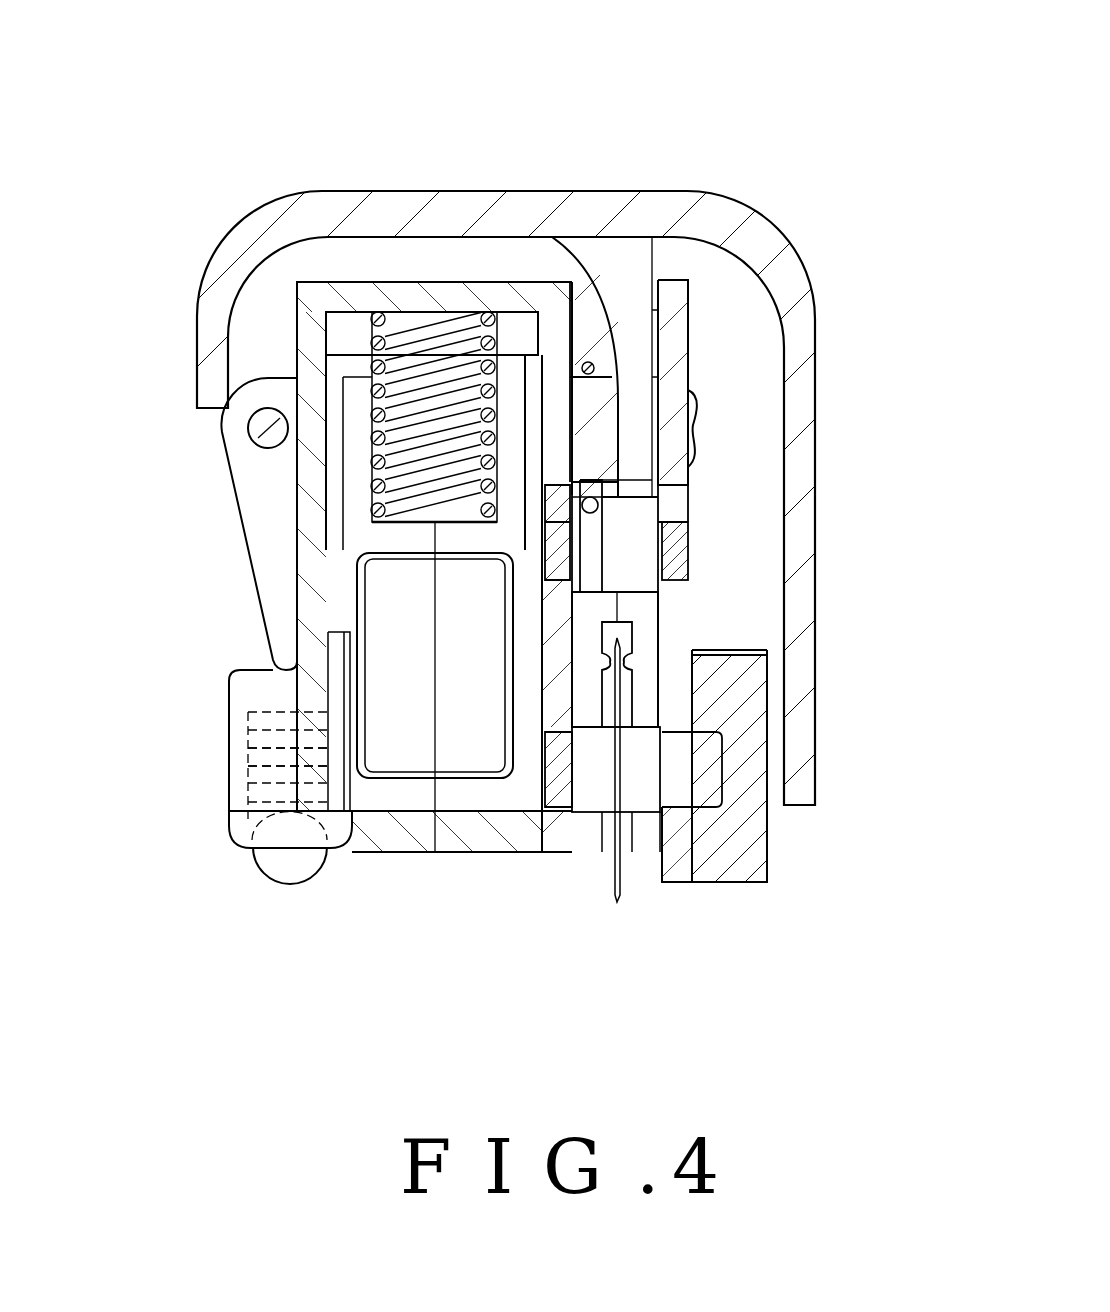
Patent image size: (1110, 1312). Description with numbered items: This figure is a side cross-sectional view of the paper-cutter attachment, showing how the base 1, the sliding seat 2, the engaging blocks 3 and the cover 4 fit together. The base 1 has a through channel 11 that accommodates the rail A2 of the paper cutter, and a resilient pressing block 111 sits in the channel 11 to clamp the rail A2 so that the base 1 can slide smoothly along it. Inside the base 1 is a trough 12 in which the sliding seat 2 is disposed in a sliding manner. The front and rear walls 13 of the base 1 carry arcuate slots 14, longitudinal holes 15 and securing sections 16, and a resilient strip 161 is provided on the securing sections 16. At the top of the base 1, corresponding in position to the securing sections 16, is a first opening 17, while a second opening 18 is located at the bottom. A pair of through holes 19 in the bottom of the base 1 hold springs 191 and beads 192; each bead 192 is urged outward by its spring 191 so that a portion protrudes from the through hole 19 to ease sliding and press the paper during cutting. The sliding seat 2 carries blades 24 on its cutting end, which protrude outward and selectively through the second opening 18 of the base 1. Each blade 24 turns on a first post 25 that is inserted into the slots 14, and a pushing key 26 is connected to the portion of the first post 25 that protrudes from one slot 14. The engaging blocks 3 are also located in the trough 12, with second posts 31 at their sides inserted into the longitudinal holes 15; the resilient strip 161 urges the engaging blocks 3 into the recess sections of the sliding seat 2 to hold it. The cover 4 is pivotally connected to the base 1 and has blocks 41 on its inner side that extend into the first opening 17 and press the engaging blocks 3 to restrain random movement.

The base 1 is at (312, 405).
The sliding seat 2 is at (645, 663).
The engaging blocks 3 is at (640, 577).
The cover 4 is at (385, 215).
The through channel 11 is at (528, 760).
The trough 12 is at (555, 243).
The front and rear walls 13 is at (565, 432).
The arcuate slots 14 is at (700, 725).
The longitudinal holes 15 is at (677, 503).
The securing sections 16 is at (598, 408).
The first opening 17 is at (581, 337).
The second opening 18 is at (585, 835).
The through holes 19 is at (262, 752).
The blades 24 is at (620, 904).
The first post 25 is at (705, 778).
The pushing key 26 is at (746, 860).
The second posts 31 is at (672, 537).
The blocks 41 is at (635, 462).
The resilient pressing block 111 is at (355, 388).
The resilient strip 161 is at (593, 363).
The springs 191 is at (250, 760).
The beads 192 is at (288, 857).
The rail A2 is at (360, 585).